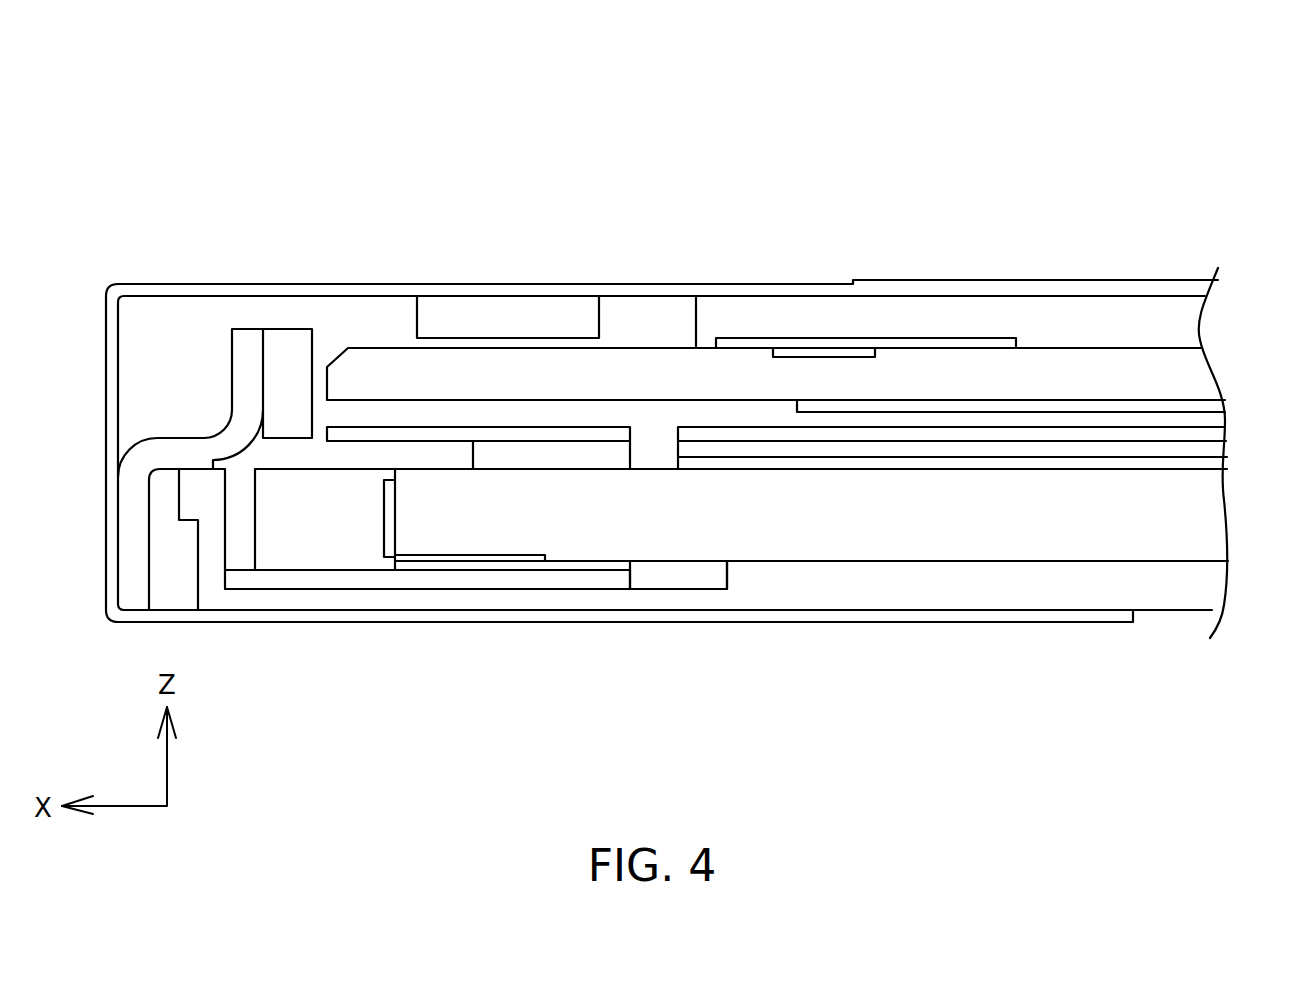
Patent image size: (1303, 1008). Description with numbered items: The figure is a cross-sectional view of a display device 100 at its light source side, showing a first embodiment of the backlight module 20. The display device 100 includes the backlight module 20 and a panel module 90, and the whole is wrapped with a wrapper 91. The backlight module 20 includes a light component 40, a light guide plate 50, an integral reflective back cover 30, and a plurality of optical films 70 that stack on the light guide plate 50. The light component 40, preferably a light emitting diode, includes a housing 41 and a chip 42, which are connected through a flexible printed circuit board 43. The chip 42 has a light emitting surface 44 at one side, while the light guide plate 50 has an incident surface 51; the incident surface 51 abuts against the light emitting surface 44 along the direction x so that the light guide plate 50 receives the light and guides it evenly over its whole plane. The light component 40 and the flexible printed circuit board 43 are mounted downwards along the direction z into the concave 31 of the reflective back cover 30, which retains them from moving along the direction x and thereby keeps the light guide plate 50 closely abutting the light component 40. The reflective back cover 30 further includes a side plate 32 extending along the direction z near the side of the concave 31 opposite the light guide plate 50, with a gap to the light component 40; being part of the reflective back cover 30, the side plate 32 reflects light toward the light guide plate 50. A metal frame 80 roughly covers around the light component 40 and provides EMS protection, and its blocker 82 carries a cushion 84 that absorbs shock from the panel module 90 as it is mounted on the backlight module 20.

The display device 100 is at (1125, 123).
The backlight module 20 is at (1176, 622).
The reflective back cover 30 is at (817, 594).
The concave 31 is at (680, 583).
The side plate 32 is at (208, 557).
The light component 40 is at (398, 608).
The housing 41 is at (290, 552).
The chip 42 is at (388, 542).
The flexible printed circuit board 43 is at (545, 582).
The light emitting surface 44 is at (397, 533).
The light guide plate 50 is at (978, 544).
The incident surface 51 is at (396, 490).
The optical films 70 is at (1163, 457).
The metal frame 80 is at (172, 372).
The blocker 82 is at (238, 335).
The cushion 84 is at (288, 335).
The panel module 90 is at (656, 377).
The wrapper 91 is at (807, 290).